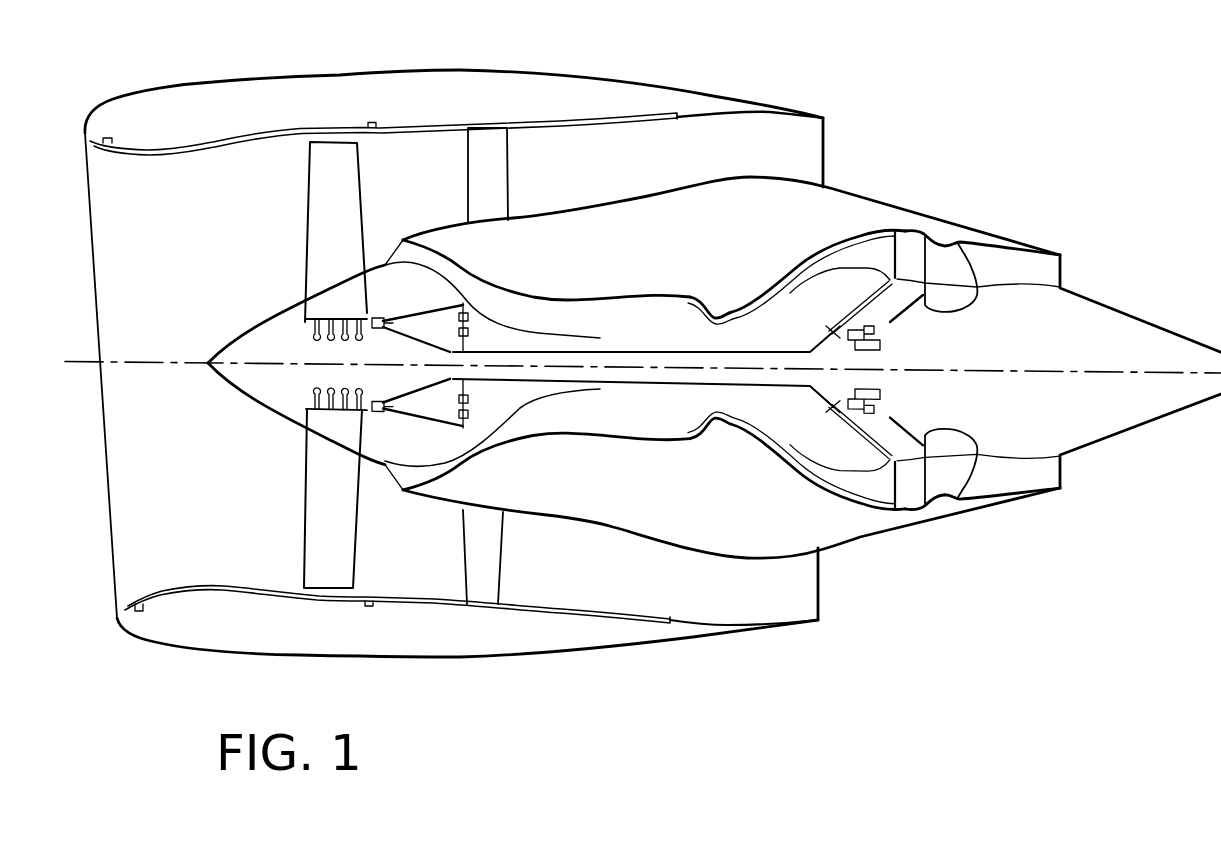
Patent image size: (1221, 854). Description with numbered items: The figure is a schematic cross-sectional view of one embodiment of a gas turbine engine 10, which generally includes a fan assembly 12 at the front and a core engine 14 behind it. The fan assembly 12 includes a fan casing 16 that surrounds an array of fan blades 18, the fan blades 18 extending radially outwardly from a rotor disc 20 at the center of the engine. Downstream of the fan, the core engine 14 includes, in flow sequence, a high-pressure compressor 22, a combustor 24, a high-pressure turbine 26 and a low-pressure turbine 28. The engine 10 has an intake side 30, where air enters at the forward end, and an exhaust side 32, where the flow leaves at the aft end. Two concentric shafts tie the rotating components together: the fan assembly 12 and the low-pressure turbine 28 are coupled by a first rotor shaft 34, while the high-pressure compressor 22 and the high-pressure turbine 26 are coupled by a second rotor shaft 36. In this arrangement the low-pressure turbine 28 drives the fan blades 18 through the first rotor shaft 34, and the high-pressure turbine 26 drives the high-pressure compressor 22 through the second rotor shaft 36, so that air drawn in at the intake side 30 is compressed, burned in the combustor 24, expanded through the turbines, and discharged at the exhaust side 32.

The gas turbine engine 10 is at (727, 42).
The fan assembly 12 is at (152, 554).
The core engine 14 is at (905, 575).
The fan casing 16 is at (422, 607).
The fan blades 18 is at (313, 195).
The rotor disc 20 is at (267, 400).
The high-pressure compressor 22 is at (550, 307).
The combustor 24 is at (719, 308).
The high-pressure turbine 26 is at (752, 450).
The low-pressure turbine 28 is at (857, 250).
The intake side 30 is at (95, 178).
The exhaust side 32 is at (860, 149).
The first rotor shaft 34 is at (568, 353).
The second rotor shaft 36 is at (590, 424).